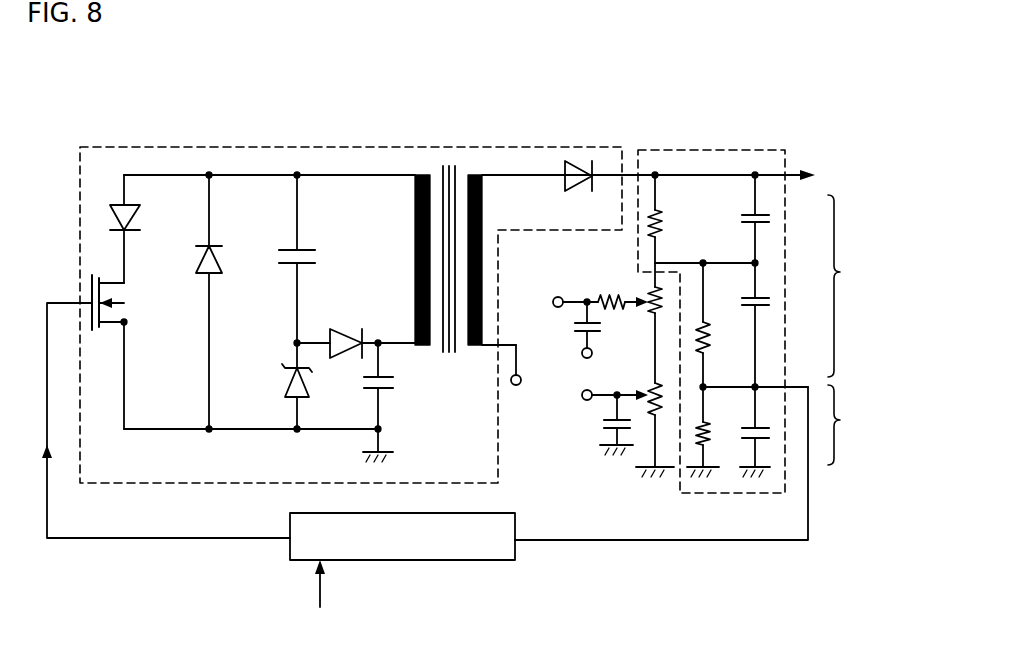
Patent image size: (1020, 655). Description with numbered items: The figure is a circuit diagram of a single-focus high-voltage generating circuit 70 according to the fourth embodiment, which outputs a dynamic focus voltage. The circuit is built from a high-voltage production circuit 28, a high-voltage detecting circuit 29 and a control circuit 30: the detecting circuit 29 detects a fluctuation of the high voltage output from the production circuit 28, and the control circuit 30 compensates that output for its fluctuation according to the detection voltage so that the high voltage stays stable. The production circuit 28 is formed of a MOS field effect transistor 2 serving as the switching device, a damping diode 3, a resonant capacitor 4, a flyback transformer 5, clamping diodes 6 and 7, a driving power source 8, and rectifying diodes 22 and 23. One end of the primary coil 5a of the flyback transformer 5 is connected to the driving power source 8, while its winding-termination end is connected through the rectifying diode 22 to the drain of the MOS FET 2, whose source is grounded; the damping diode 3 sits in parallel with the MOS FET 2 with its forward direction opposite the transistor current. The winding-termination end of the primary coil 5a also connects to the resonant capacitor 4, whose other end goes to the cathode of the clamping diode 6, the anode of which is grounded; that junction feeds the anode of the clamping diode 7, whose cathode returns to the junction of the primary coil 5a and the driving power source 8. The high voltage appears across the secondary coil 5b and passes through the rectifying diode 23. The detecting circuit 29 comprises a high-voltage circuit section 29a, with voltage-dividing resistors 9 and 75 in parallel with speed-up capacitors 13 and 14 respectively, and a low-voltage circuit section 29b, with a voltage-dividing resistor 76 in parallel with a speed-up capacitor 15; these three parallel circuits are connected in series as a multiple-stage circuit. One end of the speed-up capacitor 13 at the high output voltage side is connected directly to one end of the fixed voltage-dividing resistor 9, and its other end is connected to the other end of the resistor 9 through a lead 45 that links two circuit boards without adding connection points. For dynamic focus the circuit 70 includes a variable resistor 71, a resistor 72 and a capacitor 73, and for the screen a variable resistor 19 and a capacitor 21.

The high-voltage generating circuit 70 is at (114, 119).
The high-voltage production circuit 28 is at (332, 147).
The MOS field effect transistor 2 is at (106, 326).
The rectifying diode 22 is at (133, 213).
The damping diode 3 is at (205, 278).
The resonant capacitor 4 is at (305, 245).
The clamping diode 6 is at (283, 385).
The clamping diode 7 is at (338, 328).
The driving power source 8 is at (385, 392).
The flyback transformer 5 is at (447, 239).
The primary coil 5a is at (415, 213).
The secondary coil 5b is at (482, 225).
The rectifying diode 23 is at (577, 162).
The high-voltage detecting circuit 29 is at (690, 150).
The high-voltage circuit section 29a is at (699, 281).
The low-voltage circuit section 29b is at (715, 435).
The voltage-dividing resistor 9 is at (662, 218).
The speed-up capacitor 13 is at (769, 218).
The lead 45 is at (725, 263).
The speed-up capacitor 14 is at (769, 298).
The speed-up capacitor 15 is at (790, 416).
The variable resistor 71 is at (650, 290).
The resistor 72 is at (613, 307).
The capacitor 73 is at (578, 334).
The variable resistor 19 is at (650, 385).
The capacitor 21 is at (603, 438).
The voltage-dividing resistor 75 is at (703, 322).
The voltage-dividing resistor 76 is at (697, 443).
The control circuit 30 is at (370, 560).